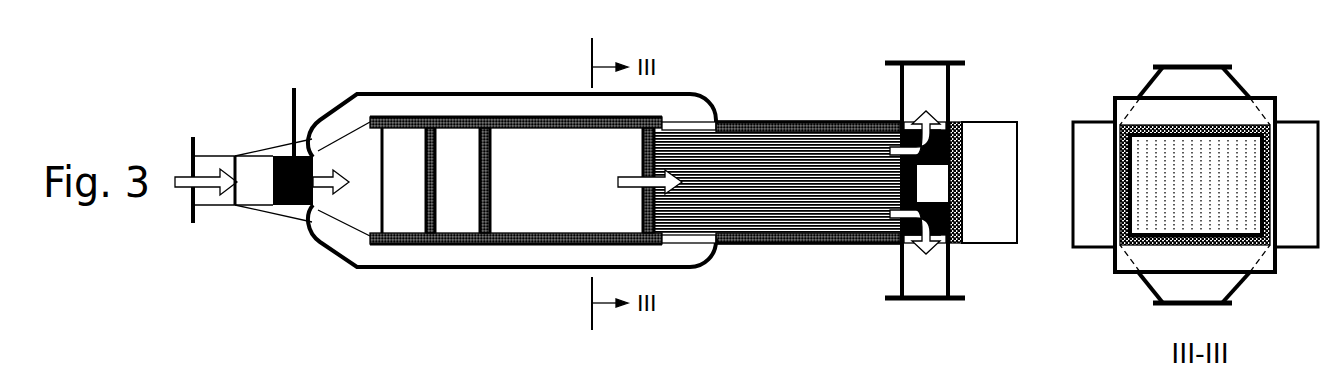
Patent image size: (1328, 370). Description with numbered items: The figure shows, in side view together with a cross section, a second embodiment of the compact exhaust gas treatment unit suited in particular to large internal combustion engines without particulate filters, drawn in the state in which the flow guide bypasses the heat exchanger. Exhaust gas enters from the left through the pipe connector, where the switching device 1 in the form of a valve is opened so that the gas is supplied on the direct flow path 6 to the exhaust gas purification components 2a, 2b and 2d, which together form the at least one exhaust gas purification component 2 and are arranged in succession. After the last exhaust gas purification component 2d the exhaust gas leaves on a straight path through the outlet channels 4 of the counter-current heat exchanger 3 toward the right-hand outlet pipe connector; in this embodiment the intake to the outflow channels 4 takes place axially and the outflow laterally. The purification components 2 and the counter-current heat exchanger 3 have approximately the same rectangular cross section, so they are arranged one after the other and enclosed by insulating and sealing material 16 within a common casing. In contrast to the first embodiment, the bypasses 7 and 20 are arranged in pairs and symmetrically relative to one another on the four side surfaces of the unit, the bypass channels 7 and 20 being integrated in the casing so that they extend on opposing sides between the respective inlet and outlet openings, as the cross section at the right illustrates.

The switching device 1 is at (606, 146).
The exhaust gas purification component 2 is at (375, 29).
The exhaust gas purification component 2a is at (408, 180).
The exhaust gas purification component 2b is at (465, 180).
The exhaust gas purification component 2d is at (615, 180).
The counter-current heat exchanger 3 is at (973, 30).
The outlet channels 4 is at (777, 182).
The direct flow path 6 is at (340, 183).
The bypass 7 is at (1195, 184).
The insulating and sealing material 16 is at (819, 131).
The bypass 20 is at (822, 185).